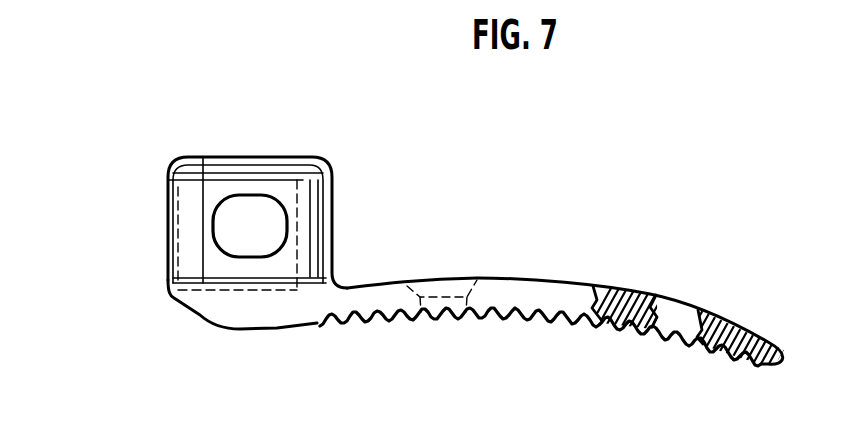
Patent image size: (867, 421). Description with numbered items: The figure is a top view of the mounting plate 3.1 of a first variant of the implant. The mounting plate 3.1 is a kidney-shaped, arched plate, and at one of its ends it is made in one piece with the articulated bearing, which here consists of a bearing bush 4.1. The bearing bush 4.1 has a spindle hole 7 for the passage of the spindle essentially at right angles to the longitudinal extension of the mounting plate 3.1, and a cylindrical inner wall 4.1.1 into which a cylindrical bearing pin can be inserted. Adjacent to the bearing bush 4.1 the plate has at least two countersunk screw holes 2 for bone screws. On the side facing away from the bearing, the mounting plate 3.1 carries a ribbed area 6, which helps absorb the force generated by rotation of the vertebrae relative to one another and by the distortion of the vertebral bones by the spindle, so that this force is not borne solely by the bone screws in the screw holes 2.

The bearing bush 4.1 is at (170, 183).
The cylindrical inner wall 4.1.1 is at (293, 197).
The spindle hole 7 is at (228, 230).
The mounting plate 3.1 is at (553, 290).
The ribbed area 6 is at (541, 318).
The screw holes 2 is at (435, 288).